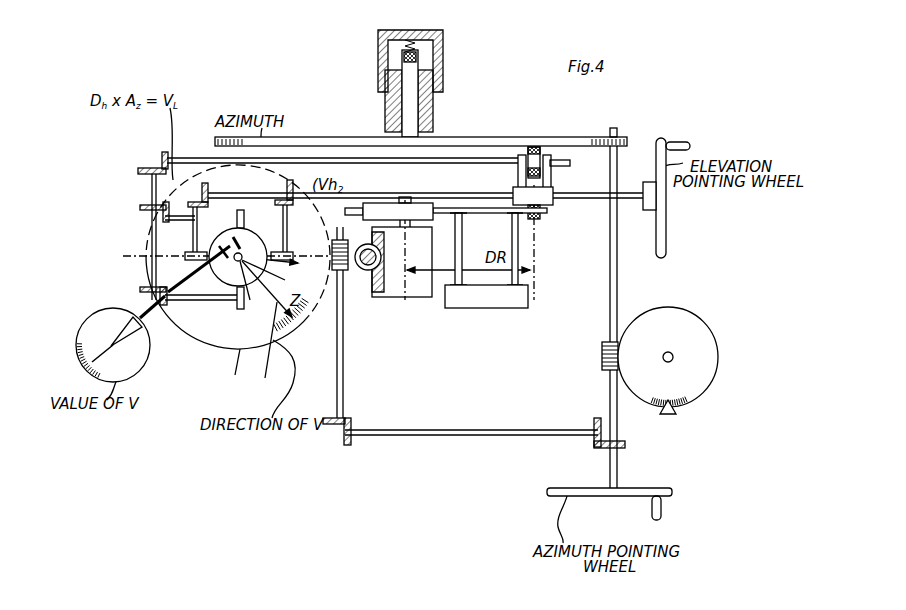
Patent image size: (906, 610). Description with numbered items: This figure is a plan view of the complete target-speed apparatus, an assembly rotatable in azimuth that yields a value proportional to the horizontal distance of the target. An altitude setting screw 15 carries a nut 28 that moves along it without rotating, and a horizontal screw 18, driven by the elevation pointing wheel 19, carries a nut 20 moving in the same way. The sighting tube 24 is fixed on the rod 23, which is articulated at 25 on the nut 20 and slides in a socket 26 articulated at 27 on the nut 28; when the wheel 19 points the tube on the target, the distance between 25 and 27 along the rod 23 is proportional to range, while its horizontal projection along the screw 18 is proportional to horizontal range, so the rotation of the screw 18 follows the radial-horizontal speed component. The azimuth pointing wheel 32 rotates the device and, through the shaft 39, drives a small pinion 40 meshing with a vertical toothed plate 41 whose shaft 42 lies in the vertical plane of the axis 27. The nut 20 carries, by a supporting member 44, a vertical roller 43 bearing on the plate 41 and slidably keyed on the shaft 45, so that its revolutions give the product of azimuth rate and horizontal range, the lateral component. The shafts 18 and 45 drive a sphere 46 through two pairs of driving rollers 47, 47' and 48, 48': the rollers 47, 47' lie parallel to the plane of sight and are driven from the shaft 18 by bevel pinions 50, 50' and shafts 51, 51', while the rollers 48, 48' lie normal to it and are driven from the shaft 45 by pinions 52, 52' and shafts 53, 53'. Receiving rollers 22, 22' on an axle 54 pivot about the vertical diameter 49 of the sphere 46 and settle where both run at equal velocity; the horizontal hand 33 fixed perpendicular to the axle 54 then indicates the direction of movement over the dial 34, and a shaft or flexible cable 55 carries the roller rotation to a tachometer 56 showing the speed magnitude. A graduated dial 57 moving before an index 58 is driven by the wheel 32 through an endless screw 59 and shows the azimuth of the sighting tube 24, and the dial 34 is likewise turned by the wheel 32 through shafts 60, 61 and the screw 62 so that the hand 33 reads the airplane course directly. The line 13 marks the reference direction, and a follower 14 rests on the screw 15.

The line of sight reference axis 13 is at (218, 256).
The cam follower wedge 14 is at (372, 293).
The altitude setting screw 15 is at (366, 270).
The horizontal screw 18 is at (480, 193).
The elevation pointing wheel 19 is at (660, 223).
The nut 20 is at (545, 197).
The receiving roller 22 is at (199, 271).
The receiving roller 22' is at (278, 243).
The rod 23 is at (492, 213).
The sighting tube 24 is at (493, 305).
The articulation axis 25 is at (538, 217).
The socket 26 is at (417, 210).
The articulation axis 27 is at (404, 198).
The nut 28 is at (422, 288).
The azimuth pointing wheel 32 is at (578, 493).
The horizontal hand 33 is at (266, 350).
The dial 34 is at (230, 373).
The shaft 39 is at (612, 318).
The small pinion 40 is at (620, 137).
The vertical toothed plate 41 is at (492, 143).
The shaft of the plate 42 is at (410, 112).
The vertical roller 43 is at (530, 150).
The supporting member 44 is at (550, 153).
The shaft 45 is at (360, 158).
The sphere 46 is at (236, 209).
The driving roller 47 is at (184, 267).
The driving roller 47' is at (283, 268).
The driving roller 48 is at (256, 219).
The driving roller 48' is at (237, 314).
The vertical diameter 49 is at (253, 289).
The bevel pinion 50 is at (277, 189).
The bevel pinion 50' is at (189, 190).
The shaft 51 is at (299, 228).
The shaft 51' is at (183, 229).
The pinion 52 is at (149, 157).
The pinion 52' is at (137, 217).
The shaft 53 is at (132, 237).
The shaft 53' is at (179, 205).
The axle 54 is at (267, 277).
The shaft or flexible cable 55 is at (148, 312).
The tachometer 56 is at (132, 370).
The graduated dial 57 is at (698, 394).
The index 58 is at (671, 413).
The endless screw 59 is at (603, 357).
The shaft 60 is at (467, 436).
The shaft 61 is at (337, 398).
The screw 62 is at (307, 311).